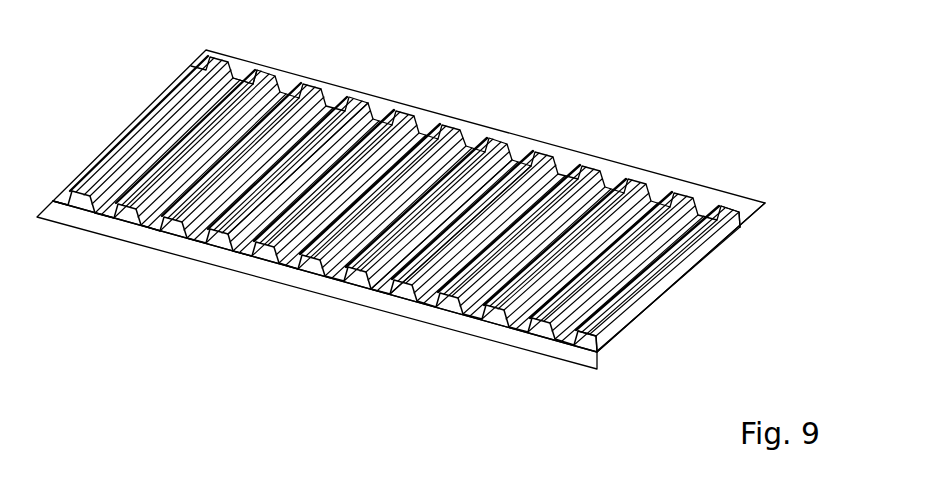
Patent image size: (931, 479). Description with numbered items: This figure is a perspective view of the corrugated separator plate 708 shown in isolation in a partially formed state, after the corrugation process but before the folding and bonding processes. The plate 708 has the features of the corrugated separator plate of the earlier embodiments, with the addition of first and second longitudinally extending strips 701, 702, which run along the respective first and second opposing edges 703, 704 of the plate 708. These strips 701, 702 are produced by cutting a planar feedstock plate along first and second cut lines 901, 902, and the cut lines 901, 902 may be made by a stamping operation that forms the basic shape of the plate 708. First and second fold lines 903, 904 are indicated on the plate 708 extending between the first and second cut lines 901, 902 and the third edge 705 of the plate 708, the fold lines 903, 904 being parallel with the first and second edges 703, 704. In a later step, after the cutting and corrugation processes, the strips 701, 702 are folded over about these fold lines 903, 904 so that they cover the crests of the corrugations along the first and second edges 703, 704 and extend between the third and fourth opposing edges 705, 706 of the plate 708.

The first longitudinally extending strip 701 is at (401, 209).
The second longitudinally extending strip 702 is at (440, 192).
The first edge 703 is at (378, 291).
The second edge 704 is at (327, 100).
The third edge 705 is at (676, 288).
The fourth edge 706 is at (125, 134).
The separator plate 708 is at (432, 199).
The first cut line 901 is at (167, 236).
The second cut line 902 is at (240, 76).
The first fold line 903 is at (600, 353).
The second fold line 904 is at (746, 212).